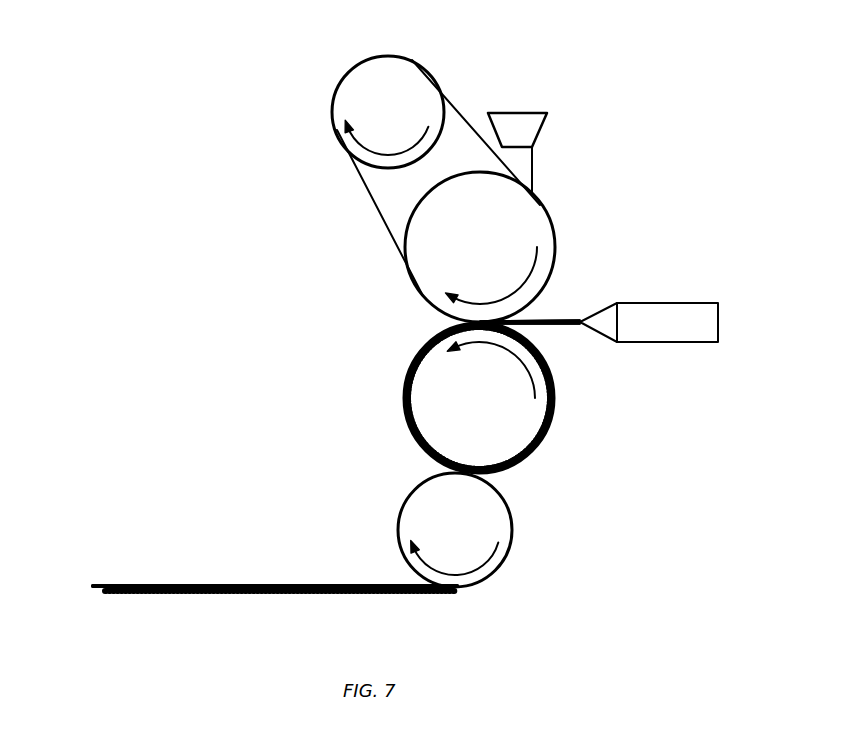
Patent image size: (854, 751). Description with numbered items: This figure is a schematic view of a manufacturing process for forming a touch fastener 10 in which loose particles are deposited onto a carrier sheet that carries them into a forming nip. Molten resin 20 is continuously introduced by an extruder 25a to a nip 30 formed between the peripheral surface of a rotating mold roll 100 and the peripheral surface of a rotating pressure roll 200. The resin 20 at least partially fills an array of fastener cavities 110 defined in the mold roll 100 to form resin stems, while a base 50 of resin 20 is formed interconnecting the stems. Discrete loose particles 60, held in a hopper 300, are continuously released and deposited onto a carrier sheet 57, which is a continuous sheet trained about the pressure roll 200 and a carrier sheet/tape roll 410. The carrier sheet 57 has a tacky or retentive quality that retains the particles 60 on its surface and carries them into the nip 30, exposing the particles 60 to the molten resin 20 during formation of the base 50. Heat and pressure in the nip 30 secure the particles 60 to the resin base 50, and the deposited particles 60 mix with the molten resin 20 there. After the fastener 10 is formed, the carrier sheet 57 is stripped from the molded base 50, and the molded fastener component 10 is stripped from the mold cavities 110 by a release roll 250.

The touch fastener 10 is at (78, 560).
The molten resin 20 is at (555, 323).
The extruder 25a is at (668, 342).
The nip 30 is at (534, 337).
The base 50 is at (307, 584).
The carrier sheet 57 is at (456, 107).
The loose particles 60 is at (517, 157).
The mold roll 100 is at (420, 445).
The fastener cavities 110 is at (394, 379).
The pressure roll 200 is at (405, 227).
The release roll 250 is at (510, 552).
The hopper 300 is at (540, 130).
The carrier sheet/tape roll 410 is at (412, 60).